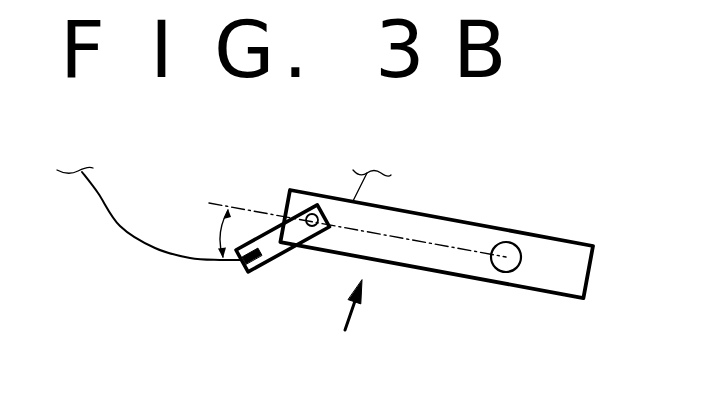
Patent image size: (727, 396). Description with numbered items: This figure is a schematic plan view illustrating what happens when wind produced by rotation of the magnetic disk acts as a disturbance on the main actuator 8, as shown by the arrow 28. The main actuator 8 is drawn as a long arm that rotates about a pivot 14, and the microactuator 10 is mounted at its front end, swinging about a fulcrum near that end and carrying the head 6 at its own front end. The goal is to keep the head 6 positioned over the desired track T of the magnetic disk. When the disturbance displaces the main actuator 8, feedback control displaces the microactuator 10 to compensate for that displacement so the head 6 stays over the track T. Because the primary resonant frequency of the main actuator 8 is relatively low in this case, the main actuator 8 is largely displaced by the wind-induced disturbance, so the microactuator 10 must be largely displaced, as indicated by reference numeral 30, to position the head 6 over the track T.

The track T is at (118, 226).
The head 6 is at (247, 272).
The main actuator 8 is at (415, 268).
The microactuator 10 is at (283, 252).
The pivot 14 is at (503, 273).
The arrow 28 is at (353, 313).
The displacement of the microactuator 30 is at (220, 233).